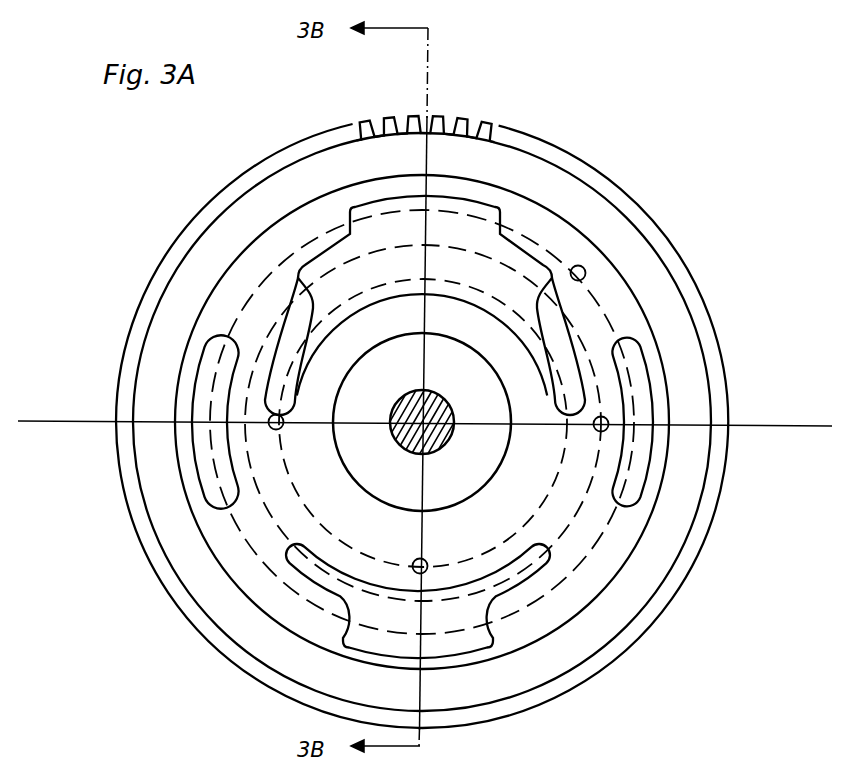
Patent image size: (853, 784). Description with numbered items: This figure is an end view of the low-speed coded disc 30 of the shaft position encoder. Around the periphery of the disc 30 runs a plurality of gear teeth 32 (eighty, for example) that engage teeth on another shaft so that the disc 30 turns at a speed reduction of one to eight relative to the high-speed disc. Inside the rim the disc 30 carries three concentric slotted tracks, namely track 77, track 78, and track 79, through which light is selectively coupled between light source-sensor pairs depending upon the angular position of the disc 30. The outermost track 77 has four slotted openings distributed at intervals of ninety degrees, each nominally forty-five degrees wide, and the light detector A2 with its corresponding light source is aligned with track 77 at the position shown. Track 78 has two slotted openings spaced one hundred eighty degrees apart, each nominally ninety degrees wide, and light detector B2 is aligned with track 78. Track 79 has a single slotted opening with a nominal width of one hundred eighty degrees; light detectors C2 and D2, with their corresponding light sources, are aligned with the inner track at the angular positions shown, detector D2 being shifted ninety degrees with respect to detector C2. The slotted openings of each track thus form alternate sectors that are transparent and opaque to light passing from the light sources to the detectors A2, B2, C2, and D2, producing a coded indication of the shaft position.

The low-speed coded disc 30 is at (622, 604).
The gear teeth 32 is at (467, 120).
The track 77 is at (311, 236).
The track 78 is at (255, 353).
The track 79 is at (310, 497).
The light detector A2 is at (584, 279).
The light detector B2 is at (593, 428).
The light detector C2 is at (428, 560).
The light detector D2 is at (284, 417).